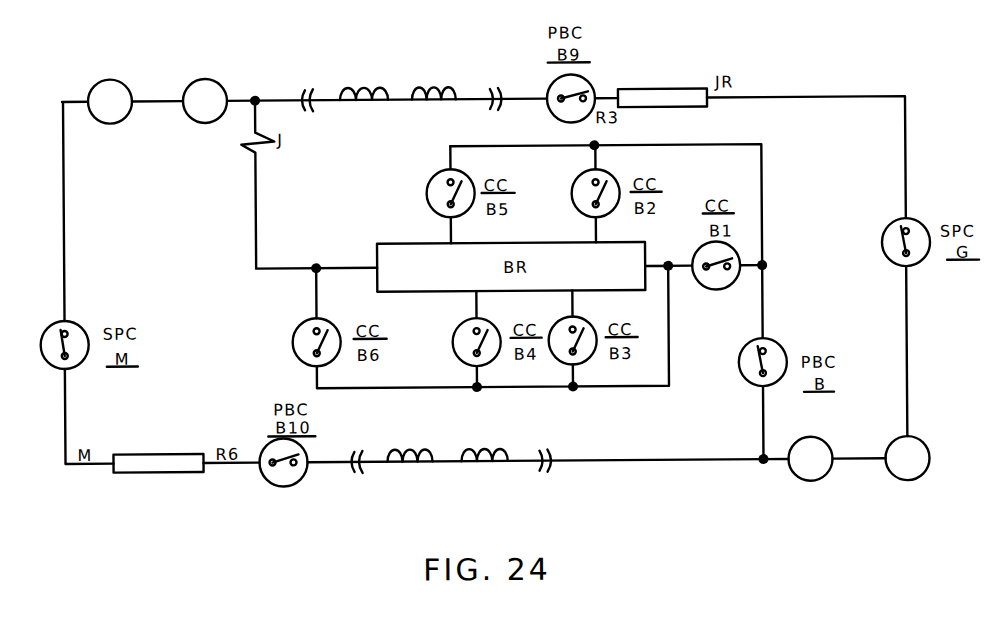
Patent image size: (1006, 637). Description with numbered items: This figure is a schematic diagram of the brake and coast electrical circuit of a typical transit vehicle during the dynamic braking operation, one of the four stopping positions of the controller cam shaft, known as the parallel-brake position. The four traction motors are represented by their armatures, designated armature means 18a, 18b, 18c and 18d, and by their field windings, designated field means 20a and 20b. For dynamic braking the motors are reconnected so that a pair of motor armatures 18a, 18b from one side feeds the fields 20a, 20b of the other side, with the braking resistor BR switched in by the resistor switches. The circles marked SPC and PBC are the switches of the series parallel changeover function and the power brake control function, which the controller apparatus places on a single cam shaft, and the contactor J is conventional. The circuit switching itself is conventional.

The armature means 18a is at (220, 84).
The armature means 18b is at (124, 84).
The armature means 18c is at (921, 447).
The armature means 18d is at (824, 447).
The field means 20a is at (377, 89).
The field means 20b is at (452, 89).